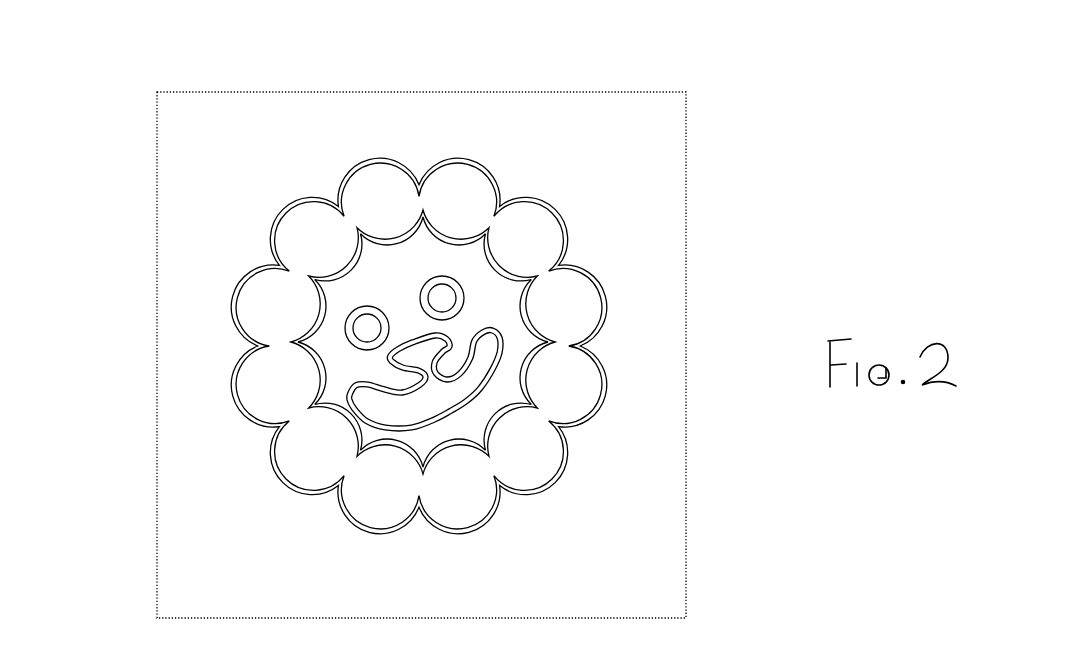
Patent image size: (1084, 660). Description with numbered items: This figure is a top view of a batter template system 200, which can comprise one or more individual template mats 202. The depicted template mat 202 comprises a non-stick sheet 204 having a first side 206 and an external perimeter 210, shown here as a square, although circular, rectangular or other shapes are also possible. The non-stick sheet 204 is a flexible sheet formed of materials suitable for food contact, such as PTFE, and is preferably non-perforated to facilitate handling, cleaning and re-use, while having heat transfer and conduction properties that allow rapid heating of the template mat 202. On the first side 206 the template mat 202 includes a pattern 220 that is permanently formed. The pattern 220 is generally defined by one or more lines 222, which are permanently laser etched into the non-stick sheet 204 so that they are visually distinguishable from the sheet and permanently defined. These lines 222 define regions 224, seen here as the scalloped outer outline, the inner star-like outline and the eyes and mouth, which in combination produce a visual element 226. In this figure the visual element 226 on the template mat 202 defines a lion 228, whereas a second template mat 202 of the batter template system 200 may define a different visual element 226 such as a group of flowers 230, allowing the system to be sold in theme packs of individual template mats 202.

The batter template system 200 is at (782, 187).
The template mat 202 is at (158, 531).
The non-stick sheet 204 is at (661, 556).
The first side 206 is at (533, 118).
The external perimeter 210 is at (687, 329).
The pattern 220 is at (567, 217).
The lines 222 is at (317, 368).
The regions 224 is at (270, 303).
The visual element 226 is at (303, 192).
The lion 228 is at (386, 157).
The group of flowers 230 is at (461, 648).